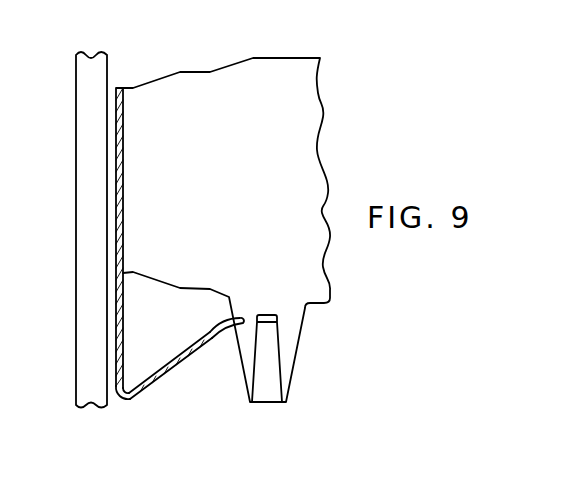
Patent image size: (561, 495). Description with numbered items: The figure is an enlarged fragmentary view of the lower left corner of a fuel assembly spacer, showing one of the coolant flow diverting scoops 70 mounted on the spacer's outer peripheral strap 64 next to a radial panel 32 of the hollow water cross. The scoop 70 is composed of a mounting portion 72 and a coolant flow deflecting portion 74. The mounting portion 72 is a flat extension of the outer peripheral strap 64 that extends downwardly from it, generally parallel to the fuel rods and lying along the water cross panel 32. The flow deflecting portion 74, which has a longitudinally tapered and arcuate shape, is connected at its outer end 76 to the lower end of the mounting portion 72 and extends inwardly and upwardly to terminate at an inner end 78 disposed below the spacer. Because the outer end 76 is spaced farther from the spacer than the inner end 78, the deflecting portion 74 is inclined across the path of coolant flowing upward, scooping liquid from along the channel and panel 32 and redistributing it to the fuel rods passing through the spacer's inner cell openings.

The radial panel 32 is at (76, 245).
The outer peripheral strap 64 is at (218, 67).
The coolant flow diverting scoop 70 is at (192, 351).
The mounting portion 72 is at (123, 319).
The coolant flow deflecting portion 74 is at (205, 348).
The outer end 76 is at (125, 402).
The inner end 78 is at (240, 313).